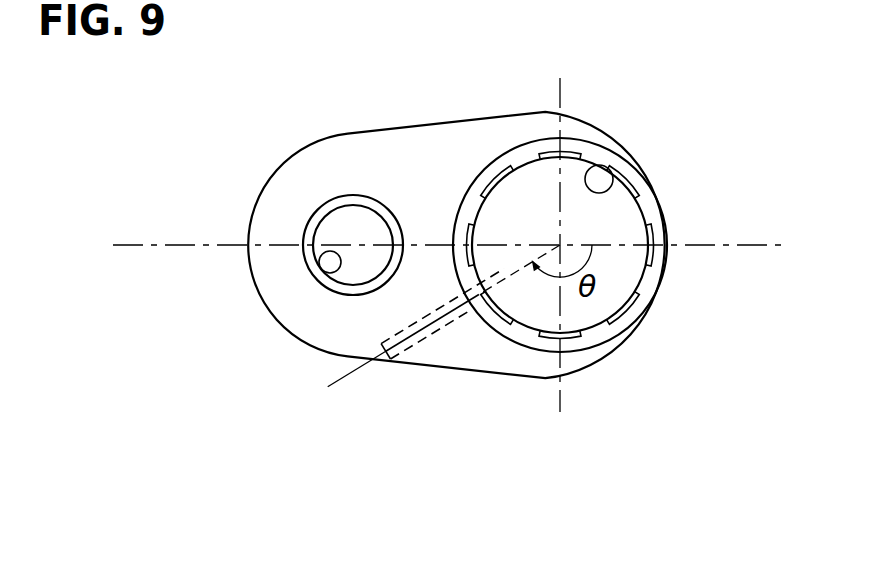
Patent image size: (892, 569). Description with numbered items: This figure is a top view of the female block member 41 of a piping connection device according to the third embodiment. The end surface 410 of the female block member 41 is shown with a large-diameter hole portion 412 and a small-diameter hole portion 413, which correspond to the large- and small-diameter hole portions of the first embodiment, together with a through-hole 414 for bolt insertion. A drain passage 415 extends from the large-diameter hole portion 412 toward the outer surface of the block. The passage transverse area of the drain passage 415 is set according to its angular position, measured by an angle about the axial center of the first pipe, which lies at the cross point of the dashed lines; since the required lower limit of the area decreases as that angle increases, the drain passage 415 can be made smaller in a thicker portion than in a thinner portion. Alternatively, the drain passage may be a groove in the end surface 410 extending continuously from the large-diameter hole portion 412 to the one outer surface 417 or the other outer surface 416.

The female block member 41 is at (252, 212).
The end surface 410 is at (382, 162).
The large-diameter hole portion 412 is at (651, 194).
The small-diameter hole portion 413 is at (612, 183).
The through-hole 414 is at (325, 272).
The drain passage 415 is at (385, 360).
The other outer surface 416 is at (442, 366).
The one outer surface 417 is at (684, 296).